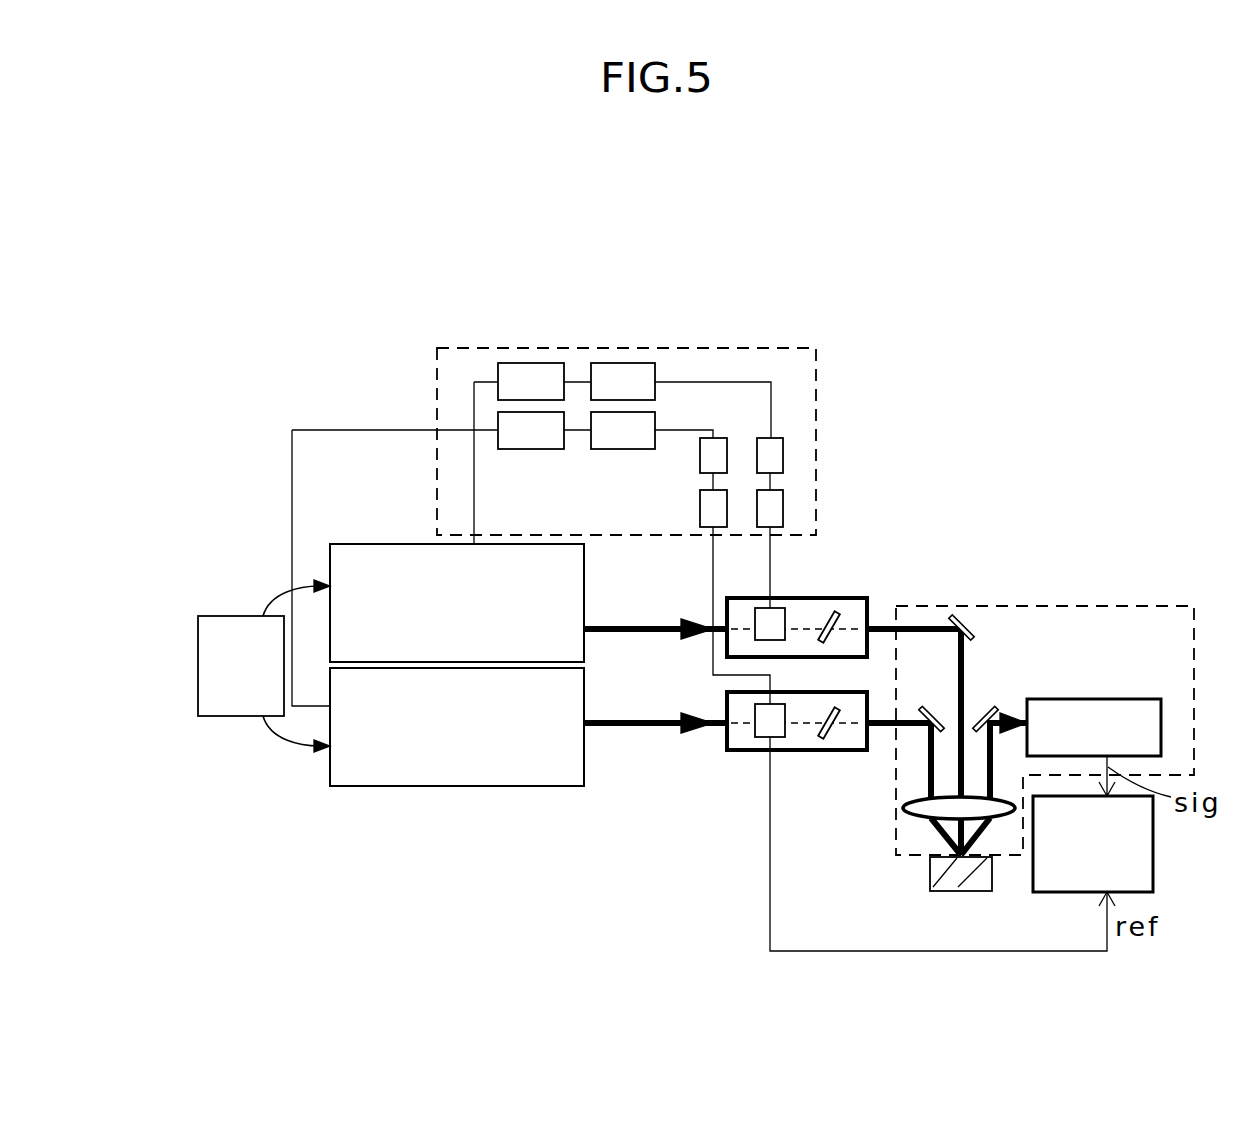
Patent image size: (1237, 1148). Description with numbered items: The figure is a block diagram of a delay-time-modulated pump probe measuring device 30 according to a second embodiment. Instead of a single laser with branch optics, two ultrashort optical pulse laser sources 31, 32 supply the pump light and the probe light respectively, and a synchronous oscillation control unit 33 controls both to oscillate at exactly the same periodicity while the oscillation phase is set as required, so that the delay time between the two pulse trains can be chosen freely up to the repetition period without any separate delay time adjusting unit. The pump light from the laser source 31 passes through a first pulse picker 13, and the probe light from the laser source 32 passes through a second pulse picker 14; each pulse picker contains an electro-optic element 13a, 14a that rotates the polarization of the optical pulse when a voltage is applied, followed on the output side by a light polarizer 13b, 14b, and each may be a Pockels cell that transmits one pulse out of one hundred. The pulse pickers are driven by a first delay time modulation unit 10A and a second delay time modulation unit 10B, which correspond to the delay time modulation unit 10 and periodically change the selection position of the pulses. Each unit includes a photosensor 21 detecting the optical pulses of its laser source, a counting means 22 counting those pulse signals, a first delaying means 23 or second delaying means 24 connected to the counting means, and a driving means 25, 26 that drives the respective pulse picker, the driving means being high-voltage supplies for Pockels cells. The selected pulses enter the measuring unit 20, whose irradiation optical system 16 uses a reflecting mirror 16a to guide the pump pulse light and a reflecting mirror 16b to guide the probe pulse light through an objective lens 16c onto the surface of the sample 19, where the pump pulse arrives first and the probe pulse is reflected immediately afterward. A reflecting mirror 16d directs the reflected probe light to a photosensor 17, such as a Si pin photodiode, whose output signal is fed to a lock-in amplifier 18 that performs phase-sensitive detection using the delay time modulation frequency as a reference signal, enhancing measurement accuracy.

The delay time modulation unit 10 is at (817, 393).
The first delay time modulation unit 10A is at (713, 381).
The second delay time modulation unit 10B is at (713, 431).
The photosensor 21 is at (513, 417).
The counting means 22 is at (622, 425).
The first delaying means 23 is at (783, 455).
The second delaying means 24 is at (700, 447).
The driving means 25 is at (783, 510).
The driving means 26 is at (700, 507).
The first pulse picker 13 is at (727, 643).
The electro-optic element 13a is at (785, 618).
The light polarizer 13b is at (843, 615).
The second pulse picker 14 is at (727, 740).
The electro-optic element 14a is at (777, 737).
The light polarizer 14b is at (820, 742).
The irradiation optical system 16 is at (937, 710).
The reflecting mirror 16a is at (955, 621).
The reflecting mirror 16b is at (925, 713).
The objective lens 16c is at (908, 818).
The reflecting mirror 16d is at (991, 712).
The photosensor 17 is at (1071, 699).
The lock-in amplifier 18 is at (1155, 847).
The sample 19 is at (928, 868).
The measuring unit 20 is at (1101, 611).
The delay-time-modulated pump probe measuring device 30 is at (1012, 471).
The laser source 31 is at (377, 544).
The laser source 32 is at (382, 787).
The synchronous oscillation control unit 33 is at (232, 717).